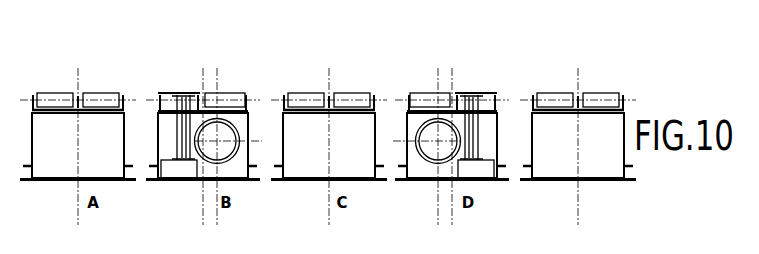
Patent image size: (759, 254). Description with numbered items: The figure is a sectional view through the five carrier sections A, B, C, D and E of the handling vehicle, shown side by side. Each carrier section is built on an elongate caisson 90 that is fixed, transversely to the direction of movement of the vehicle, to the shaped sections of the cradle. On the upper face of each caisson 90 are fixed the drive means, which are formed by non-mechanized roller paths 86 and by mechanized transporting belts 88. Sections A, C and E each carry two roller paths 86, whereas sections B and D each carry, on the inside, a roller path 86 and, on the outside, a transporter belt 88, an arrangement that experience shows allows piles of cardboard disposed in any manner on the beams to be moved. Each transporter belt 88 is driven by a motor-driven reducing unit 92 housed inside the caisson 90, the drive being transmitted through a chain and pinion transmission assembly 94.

The roller path 86 is at (92, 93).
The transporting belt 88 is at (498, 207).
The caisson 90 is at (622, 140).
The motor-driven reducing unit 92 is at (224, 126).
The chain and pinion transmission assembly 94 is at (481, 140).